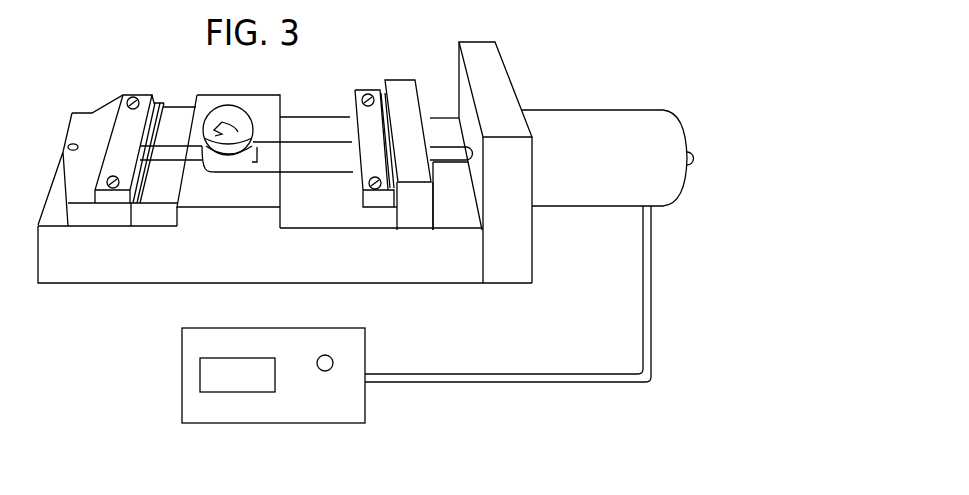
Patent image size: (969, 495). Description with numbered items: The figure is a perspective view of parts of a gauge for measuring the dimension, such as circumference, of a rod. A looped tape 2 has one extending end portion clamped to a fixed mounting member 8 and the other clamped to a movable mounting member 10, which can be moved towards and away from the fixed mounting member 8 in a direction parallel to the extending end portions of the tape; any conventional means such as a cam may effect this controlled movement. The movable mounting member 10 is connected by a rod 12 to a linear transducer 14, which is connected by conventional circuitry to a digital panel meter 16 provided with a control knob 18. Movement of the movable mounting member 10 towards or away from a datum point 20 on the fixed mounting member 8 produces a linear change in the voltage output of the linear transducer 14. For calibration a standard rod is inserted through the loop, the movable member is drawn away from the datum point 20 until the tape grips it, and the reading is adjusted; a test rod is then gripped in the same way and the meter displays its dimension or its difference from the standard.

The looped tape 2 is at (223, 121).
The fixed mounting member 8 is at (107, 112).
The movable mounting member 10 is at (397, 93).
The rod 12 is at (456, 161).
The linear transducer 14 is at (570, 123).
The digital panel meter 16 is at (182, 353).
The control knob 18 is at (333, 359).
The datum point 20 is at (72, 144).